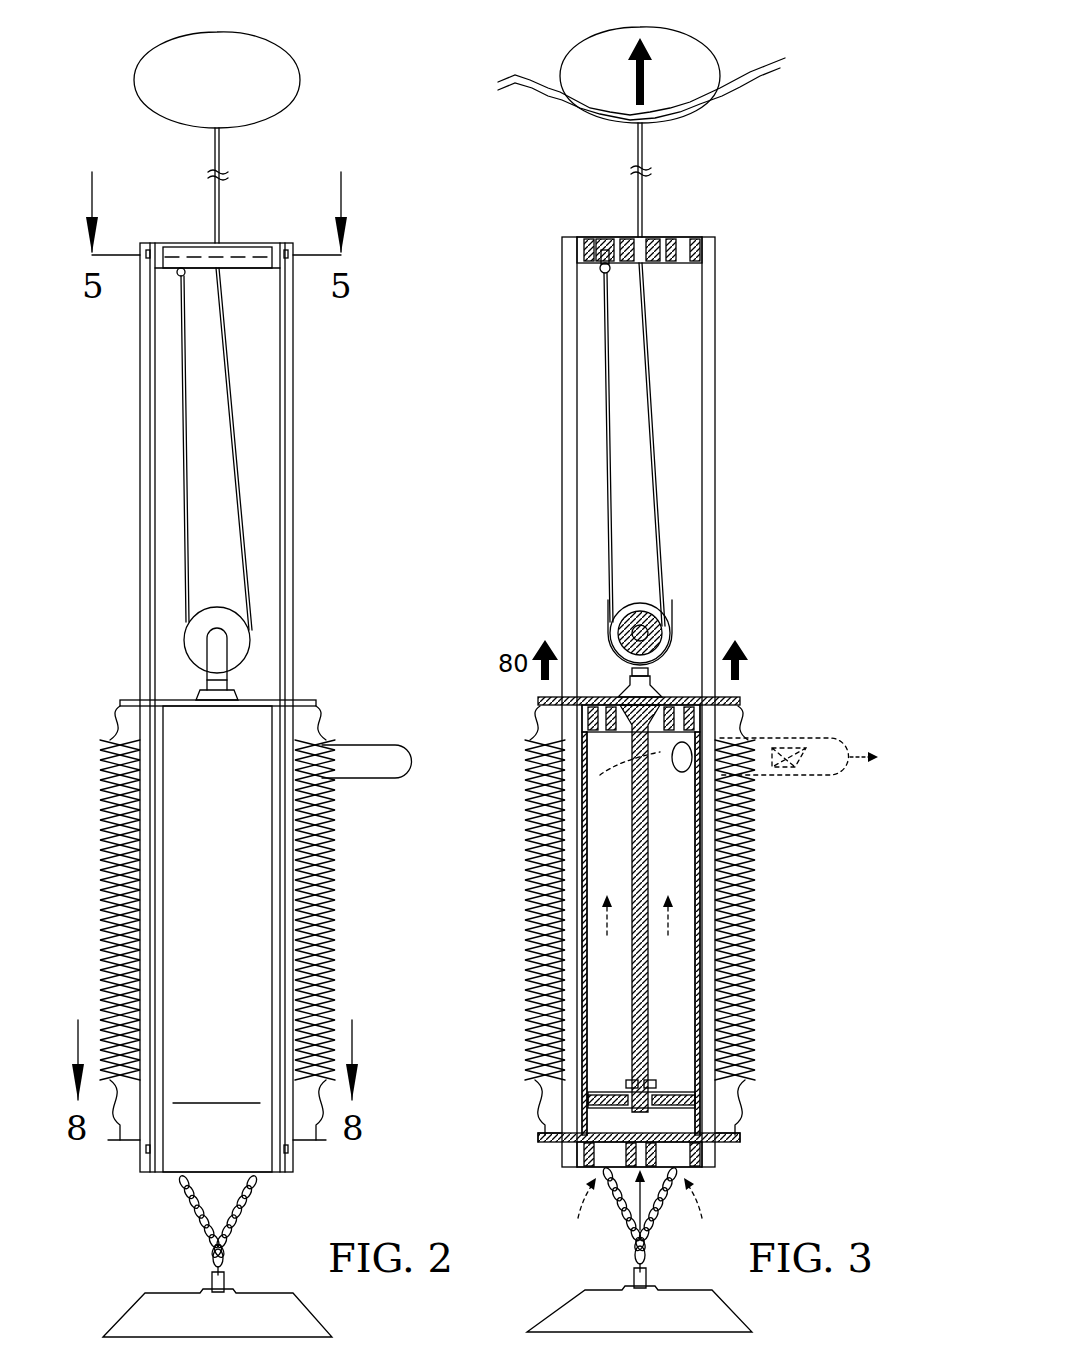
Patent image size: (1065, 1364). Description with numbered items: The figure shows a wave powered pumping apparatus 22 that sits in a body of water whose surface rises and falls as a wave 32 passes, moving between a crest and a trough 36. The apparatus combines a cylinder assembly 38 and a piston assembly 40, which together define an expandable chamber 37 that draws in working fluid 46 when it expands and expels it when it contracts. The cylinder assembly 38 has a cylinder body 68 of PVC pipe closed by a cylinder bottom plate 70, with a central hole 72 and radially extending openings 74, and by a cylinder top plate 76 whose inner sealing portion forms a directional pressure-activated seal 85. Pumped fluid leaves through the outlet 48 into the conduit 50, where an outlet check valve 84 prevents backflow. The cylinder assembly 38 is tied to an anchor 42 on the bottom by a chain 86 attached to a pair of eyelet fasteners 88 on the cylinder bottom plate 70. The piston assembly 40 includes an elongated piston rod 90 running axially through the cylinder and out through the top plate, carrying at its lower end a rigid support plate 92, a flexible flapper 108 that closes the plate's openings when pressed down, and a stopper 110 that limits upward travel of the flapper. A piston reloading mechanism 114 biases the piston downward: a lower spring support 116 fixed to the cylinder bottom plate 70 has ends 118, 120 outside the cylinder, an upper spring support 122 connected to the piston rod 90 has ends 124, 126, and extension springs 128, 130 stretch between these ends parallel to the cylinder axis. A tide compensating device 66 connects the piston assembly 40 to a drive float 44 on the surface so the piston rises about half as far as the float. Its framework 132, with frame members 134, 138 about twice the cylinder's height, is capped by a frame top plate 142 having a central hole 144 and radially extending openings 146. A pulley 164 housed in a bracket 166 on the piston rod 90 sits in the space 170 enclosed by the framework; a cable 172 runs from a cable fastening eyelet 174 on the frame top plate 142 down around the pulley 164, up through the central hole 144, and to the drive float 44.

In FIG. 2, the wave powered pumping apparatus 22 is at (118, 560).
In FIG. 3, the wave powered pumping apparatus 22 is at (542, 560).
In FIG. 3, the wave 32 is at (795, 52).
In FIG. 3, the trough 36 is at (615, 138).
In FIG. 3, the expandable chamber 37 is at (706, 926).
In FIG. 2, the cylinder assembly 38 is at (256, 907).
In FIG. 3, the cylinder assembly 38 is at (706, 852).
In FIG. 3, the piston assembly 40 is at (654, 966).
In FIG. 2, the anchor 42 is at (140, 1312).
In FIG. 3, the anchor 42 is at (560, 1308).
In FIG. 2, the drive float 44 is at (290, 62).
In FIG. 3, the drive float 44 is at (712, 60).
In FIG. 3, the working fluid 46 is at (590, 896).
In FIG. 3, the outlet 48 is at (674, 758).
In FIG. 2, the conduit 50 is at (372, 752).
In FIG. 3, the conduit 50 is at (762, 776).
In FIG. 2, the tide compensating device 66 is at (316, 560).
In FIG. 3, the tide compensating device 66 is at (742, 560).
In FIG. 2, the cylinder body 68 is at (160, 896).
In FIG. 3, the cylinder body 68 is at (580, 862).
In FIG. 3, the cylinder bottom plate 70 is at (596, 1170).
In FIG. 3, the central hole 72 is at (646, 1225).
In FIG. 3, the radially extending openings 74 is at (684, 1170).
In FIG. 3, the cylinder top plate 76 is at (582, 720).
In FIG. 3, the outlet check valve 84 is at (806, 766).
In FIG. 3, the directional pressure-activated seal 85 is at (620, 738).
In FIG. 2, the chain 86 is at (202, 1232).
In FIG. 3, the chain 86 is at (616, 1205).
In FIG. 2, the eyelet fasteners 88 is at (182, 1182).
In FIG. 3, the eyelet fasteners 88 is at (600, 1200).
In FIG. 3, the piston rod 90 is at (648, 1004).
In FIG. 3, the rigid support plate 92 is at (700, 1100).
In FIG. 3, the flexible flapper 108 is at (670, 1102).
In FIG. 3, the stopper 110 is at (630, 1086).
In FIG. 2, the piston reloading mechanism 114 is at (497, 975).
In FIG. 3, the lower spring support 116 is at (600, 1100).
In FIG. 2, the end 118 is at (153, 1150).
In FIG. 3, the end 118 is at (560, 1142).
In FIG. 2, the end 120 is at (296, 1148).
In FIG. 3, the end 120 is at (725, 1142).
In FIG. 3, the upper spring support 122 is at (645, 697).
In FIG. 2, the end 124 is at (150, 700).
In FIG. 3, the end 124 is at (538, 704).
In FIG. 2, the end 126 is at (298, 700).
In FIG. 3, the end 126 is at (725, 702).
In FIG. 2, the extension spring 128 is at (116, 826).
In FIG. 3, the extension spring 128 is at (540, 834).
In FIG. 2, the extension spring 130 is at (324, 834).
In FIG. 3, the extension spring 130 is at (750, 884).
In FIG. 2, the framework 132 is at (117, 396).
In FIG. 3, the framework 132 is at (738, 362).
In FIG. 2, the frame member 134 is at (143, 438).
In FIG. 3, the frame member 134 is at (566, 434).
In FIG. 2, the frame member 138 is at (287, 437).
In FIG. 3, the frame member 138 is at (710, 434).
In FIG. 3, the frame top plate 142 is at (694, 240).
In FIG. 3, the central hole 144 is at (645, 241).
In FIG. 3, the radially extending openings 146 is at (596, 241).
In FIG. 2, the pulley 164 is at (232, 634).
In FIG. 3, the pulley 164 is at (657, 632).
In FIG. 2, the bracket 166 is at (224, 676).
In FIG. 3, the bracket 166 is at (650, 676).
In FIG. 2, the space 170 is at (262, 336).
In FIG. 3, the space 170 is at (680, 300).
In FIG. 2, the cable 172 is at (232, 404).
In FIG. 3, the cable 172 is at (658, 400).
In FIG. 2, the cable fastening eyelet 174 is at (176, 276).
In FIG. 3, the cable fastening eyelet 174 is at (600, 268).